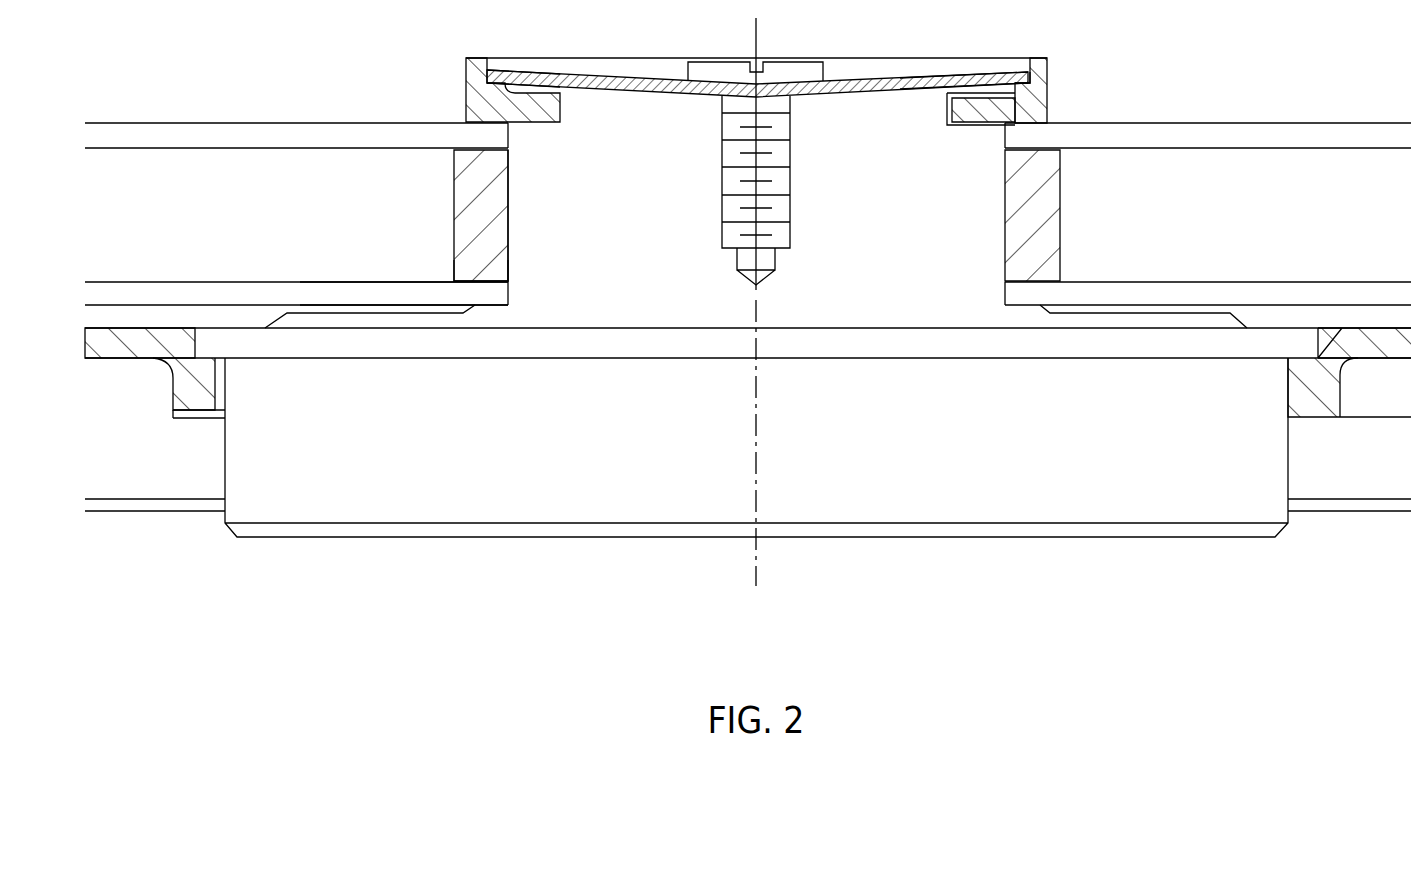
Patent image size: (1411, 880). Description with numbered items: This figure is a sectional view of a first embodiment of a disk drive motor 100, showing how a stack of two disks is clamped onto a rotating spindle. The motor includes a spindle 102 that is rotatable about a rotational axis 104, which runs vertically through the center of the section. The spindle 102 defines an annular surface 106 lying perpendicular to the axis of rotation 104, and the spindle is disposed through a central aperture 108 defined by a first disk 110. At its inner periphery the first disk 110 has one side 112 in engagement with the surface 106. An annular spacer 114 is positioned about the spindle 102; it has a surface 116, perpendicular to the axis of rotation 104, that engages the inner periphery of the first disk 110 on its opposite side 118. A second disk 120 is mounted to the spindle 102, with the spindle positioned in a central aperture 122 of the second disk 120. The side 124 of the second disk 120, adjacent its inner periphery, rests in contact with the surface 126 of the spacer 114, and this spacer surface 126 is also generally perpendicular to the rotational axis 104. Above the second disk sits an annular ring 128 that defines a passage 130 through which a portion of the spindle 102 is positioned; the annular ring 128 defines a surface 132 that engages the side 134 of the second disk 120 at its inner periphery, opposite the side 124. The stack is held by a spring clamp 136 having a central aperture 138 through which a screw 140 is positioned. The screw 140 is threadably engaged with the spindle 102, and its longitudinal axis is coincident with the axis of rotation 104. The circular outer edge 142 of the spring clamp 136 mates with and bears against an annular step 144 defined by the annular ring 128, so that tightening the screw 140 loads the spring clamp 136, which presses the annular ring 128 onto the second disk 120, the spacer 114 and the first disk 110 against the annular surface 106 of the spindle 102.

The disk drive motor 100 is at (1048, 484).
The spindle 102 is at (871, 225).
The rotational axis 104 is at (762, 20).
The annular surface 106 is at (483, 312).
The central aperture 108 is at (513, 297).
The first disk 110 is at (106, 292).
The side of first disk 112 is at (497, 306).
The annular spacer 114 is at (472, 210).
The spacer surface 116 is at (462, 286).
The opposite side of first disk 118 is at (474, 272).
The second disk 120 is at (122, 133).
The central aperture of second disk 122 is at (518, 131).
The side of second disk 124 is at (1036, 150).
The spacer surface 126 is at (463, 142).
The annular ring 128 is at (975, 118).
The passage 130 is at (950, 104).
The ring surface 132 is at (1010, 123).
The side of second disk 134 is at (1043, 88).
The spring clamp 136 is at (952, 78).
The central aperture of spring clamp 138 is at (792, 93).
The screw 140 is at (726, 70).
The circular outer edge 142 is at (1025, 88).
The annular step 144 is at (492, 77).